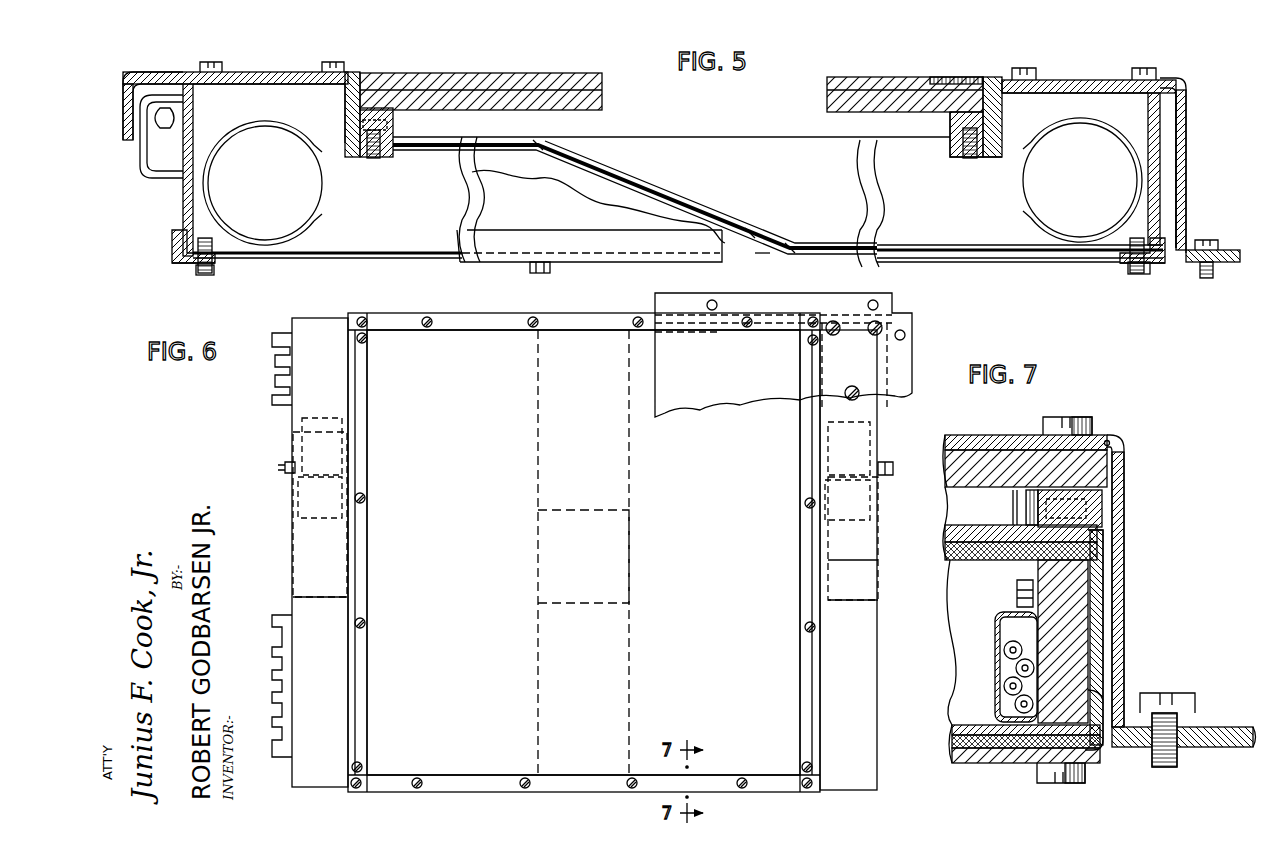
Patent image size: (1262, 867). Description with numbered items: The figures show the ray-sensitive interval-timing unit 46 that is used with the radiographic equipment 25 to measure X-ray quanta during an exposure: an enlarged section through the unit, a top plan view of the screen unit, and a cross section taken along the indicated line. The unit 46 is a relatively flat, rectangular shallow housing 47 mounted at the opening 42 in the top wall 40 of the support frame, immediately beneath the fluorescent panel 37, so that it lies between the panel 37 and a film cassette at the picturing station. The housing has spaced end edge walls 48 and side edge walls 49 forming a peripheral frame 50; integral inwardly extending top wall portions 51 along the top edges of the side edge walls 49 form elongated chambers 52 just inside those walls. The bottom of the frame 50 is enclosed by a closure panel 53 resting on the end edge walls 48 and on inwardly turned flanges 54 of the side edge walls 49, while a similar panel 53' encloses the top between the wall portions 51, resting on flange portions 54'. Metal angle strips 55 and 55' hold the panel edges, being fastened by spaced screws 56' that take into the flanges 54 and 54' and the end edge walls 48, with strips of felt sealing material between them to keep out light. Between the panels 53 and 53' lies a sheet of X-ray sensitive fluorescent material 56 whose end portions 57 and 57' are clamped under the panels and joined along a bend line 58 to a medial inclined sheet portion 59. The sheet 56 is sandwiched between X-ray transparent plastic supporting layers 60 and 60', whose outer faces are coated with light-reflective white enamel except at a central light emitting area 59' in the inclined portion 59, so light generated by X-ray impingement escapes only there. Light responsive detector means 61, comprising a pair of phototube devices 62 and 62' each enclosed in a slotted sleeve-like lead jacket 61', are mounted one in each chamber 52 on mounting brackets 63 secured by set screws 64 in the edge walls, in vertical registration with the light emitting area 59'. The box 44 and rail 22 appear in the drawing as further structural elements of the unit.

In FIG. 5, the lower rail 22 is at (935, 260).
In FIG. 7, the radiographic equipment 25 is at (1128, 437).
In FIG. 5, the fluorescent panel 37 is at (870, 93).
In FIG. 7, the fluorescent panel 37 is at (978, 467).
In FIG. 5, the top wall 40 is at (1220, 267).
In FIG. 7, the top wall 40 is at (1215, 745).
In FIG. 5, the opening 42 is at (1172, 262).
In FIG. 6, the box 44 is at (860, 505).
In FIG. 5, the ray-sensitive interval-timing unit 46 is at (1125, 123).
In FIG. 5, the housing 47 is at (1167, 197).
In FIG. 7, the housing 47 is at (975, 620).
In FIG. 5, the end edge walls 48 is at (513, 205).
In FIG. 6, the end edge walls 48 is at (372, 312).
In FIG. 7, the end edge walls 48 is at (1068, 628).
In FIG. 5, the side edge walls 49 is at (190, 112).
In FIG. 6, the side edge walls 49 is at (292, 422).
In FIG. 5, the peripheral frame 50 is at (180, 194).
In FIG. 5, the top wall portions 51 is at (243, 83).
In FIG. 6, the top wall portions 51 is at (312, 337).
In FIG. 5, the elongated chambers 52 is at (280, 97).
In FIG. 5, the closure panel 53 is at (327, 268).
In FIG. 5, the closure panel 53' is at (650, 94).
In FIG. 5, the inwardly turned flanges 54 is at (671, 232).
In FIG. 5, the flange portions 54' is at (672, 160).
In FIG. 5, the angle strip 55 is at (668, 285).
In FIG. 6, the angle strip 55 is at (584, 549).
In FIG. 7, the angle strip 55 is at (1120, 661).
In FIG. 5, the angle strip 55' is at (679, 100).
In FIG. 6, the angle strip 55' is at (584, 552).
In FIG. 5, the sheet of X-ray sensitive fluorescent material 56 is at (417, 207).
In FIG. 7, the sheet of X-ray sensitive fluorescent material 56 is at (1107, 651).
In FIG. 5, the fastening screws 56' is at (756, 215).
In FIG. 6, the fastening screws 56' is at (584, 552).
In FIG. 5, the end portion of sensitive sheet 57 is at (695, 193).
In FIG. 7, the end portion of sensitive sheet 57 is at (1089, 640).
In FIG. 5, the end portion of sensitive sheet 57' is at (671, 162).
In FIG. 6, the end portion of sensitive sheet 57' is at (583, 552).
In FIG. 5, the bend line 58 is at (538, 140).
In FIG. 5, the inclined sheet portion 59 is at (635, 197).
In FIG. 6, the inclined sheet portion 59 is at (583, 531).
In FIG. 6, the central light emitting area 59' is at (583, 540).
In FIG. 5, the supporting layer 60 is at (760, 269).
In FIG. 5, the supporting layer 60' is at (765, 220).
In FIG. 5, the light responsive detector means 61 is at (672, 194).
In FIG. 6, the light responsive detector means 61 is at (583, 608).
In FIG. 5, the lead jacket 61' is at (672, 181).
In FIG. 5, the phototube device 62 is at (265, 203).
In FIG. 6, the phototube device 62 is at (296, 507).
In FIG. 5, the phototube device 62' is at (1080, 205).
In FIG. 6, the phototube device 62' is at (870, 565).
In FIG. 6, the mounting brackets 63 is at (323, 470).
In FIG. 6, the set screws 64 is at (285, 467).